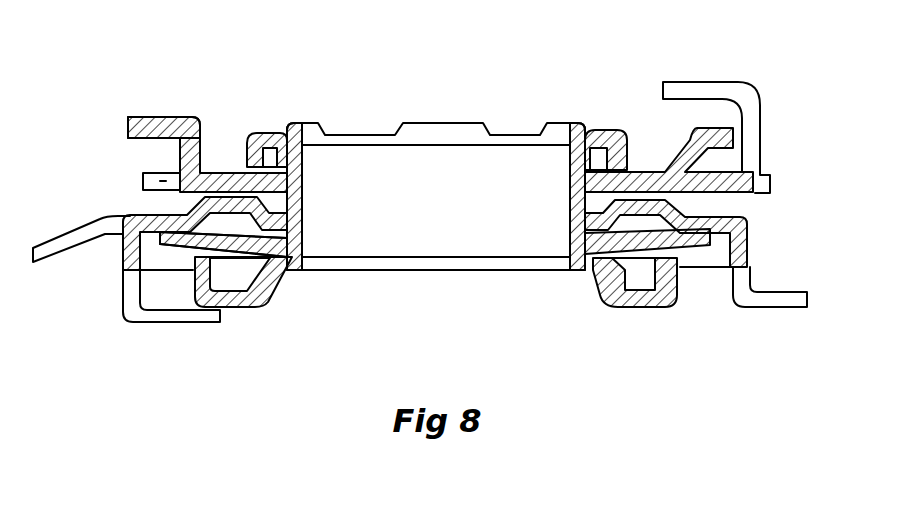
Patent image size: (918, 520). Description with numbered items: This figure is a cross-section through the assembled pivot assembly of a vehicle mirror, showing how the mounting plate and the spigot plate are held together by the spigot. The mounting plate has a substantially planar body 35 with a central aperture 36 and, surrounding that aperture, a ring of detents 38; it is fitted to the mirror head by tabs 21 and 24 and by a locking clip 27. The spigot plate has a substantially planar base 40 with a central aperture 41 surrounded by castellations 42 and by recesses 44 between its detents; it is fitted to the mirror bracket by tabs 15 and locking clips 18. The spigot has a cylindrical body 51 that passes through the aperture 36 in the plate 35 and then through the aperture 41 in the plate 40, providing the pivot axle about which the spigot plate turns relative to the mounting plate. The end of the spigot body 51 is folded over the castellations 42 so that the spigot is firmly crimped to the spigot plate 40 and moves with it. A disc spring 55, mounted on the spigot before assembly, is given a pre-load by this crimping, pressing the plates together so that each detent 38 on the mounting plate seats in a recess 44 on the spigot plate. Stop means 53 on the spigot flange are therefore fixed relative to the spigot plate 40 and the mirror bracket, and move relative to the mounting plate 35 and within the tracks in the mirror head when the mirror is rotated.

The tab 15 is at (161, 122).
The locking clip 18 is at (758, 128).
The tab 21 is at (168, 316).
The tab 24 is at (767, 292).
The locking clip 27 is at (75, 240).
The mounting plate body 35 is at (710, 217).
The aperture 36 is at (570, 229).
The detent 38 is at (182, 205).
The spigot plate base 40 is at (160, 181).
The aperture 41 is at (273, 157).
The castellations 42 is at (440, 128).
The recess 44 is at (230, 180).
The cylindrical body 51 is at (300, 226).
The stop means 53 is at (267, 305).
The spring 55 is at (227, 253).